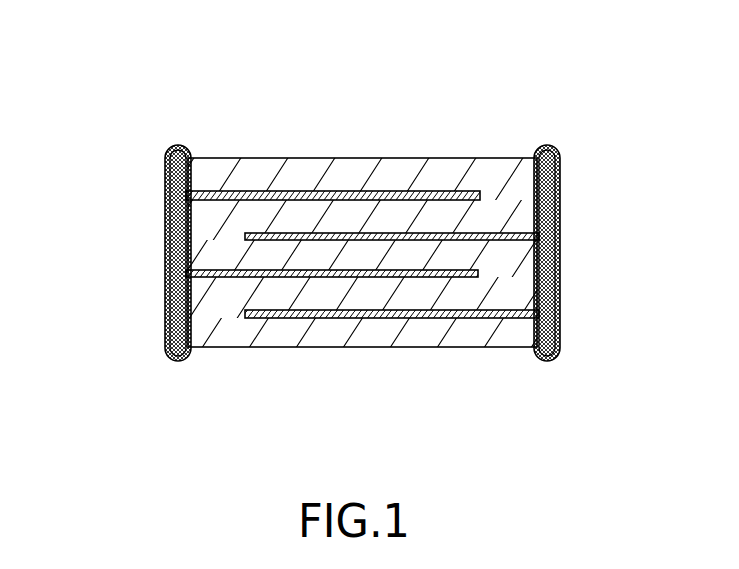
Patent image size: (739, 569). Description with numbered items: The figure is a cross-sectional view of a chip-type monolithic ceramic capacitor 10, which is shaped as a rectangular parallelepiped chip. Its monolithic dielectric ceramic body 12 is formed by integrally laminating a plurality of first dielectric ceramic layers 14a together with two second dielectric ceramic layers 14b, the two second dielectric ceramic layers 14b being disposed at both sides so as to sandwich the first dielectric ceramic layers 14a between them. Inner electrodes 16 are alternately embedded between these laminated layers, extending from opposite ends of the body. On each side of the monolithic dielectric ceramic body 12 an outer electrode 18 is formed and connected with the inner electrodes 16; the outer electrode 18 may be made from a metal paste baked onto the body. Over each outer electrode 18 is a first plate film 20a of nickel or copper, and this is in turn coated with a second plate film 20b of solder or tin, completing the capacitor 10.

The monolithic ceramic capacitor 10 is at (152, 49).
The monolithic dielectric ceramic body 12 is at (297, 152).
The first dielectric ceramic layer 14a is at (448, 217).
The second dielectric ceramic layer 14b is at (400, 173).
The inner electrode 16 is at (277, 318).
The outer electrode 18 is at (167, 191).
The first plate film 20a is at (167, 248).
The second plate film 20b is at (167, 305).